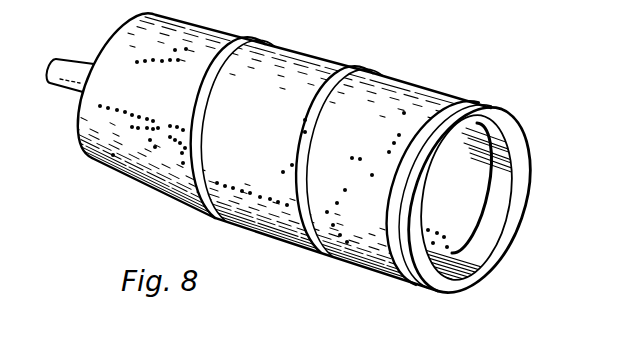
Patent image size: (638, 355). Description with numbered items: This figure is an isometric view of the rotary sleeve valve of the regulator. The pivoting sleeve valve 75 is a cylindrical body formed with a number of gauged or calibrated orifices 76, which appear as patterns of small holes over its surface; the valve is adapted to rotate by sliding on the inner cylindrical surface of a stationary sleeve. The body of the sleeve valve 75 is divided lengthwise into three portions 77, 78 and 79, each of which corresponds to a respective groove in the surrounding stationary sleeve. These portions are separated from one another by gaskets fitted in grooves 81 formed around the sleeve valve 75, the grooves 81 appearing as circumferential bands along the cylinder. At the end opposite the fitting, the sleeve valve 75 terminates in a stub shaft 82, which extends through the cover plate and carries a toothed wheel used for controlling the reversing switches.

The pivoting sleeve valve 75 is at (497, 222).
The gauged or calibrated orifices 76 is at (103, 160).
The portion of sleeve valve 77 is at (369, 256).
The portion of sleeve valve 78 is at (325, 78).
The portion of sleeve valve 79 is at (147, 181).
The grooves 81 is at (216, 212).
The stub shaft 82 is at (62, 78).